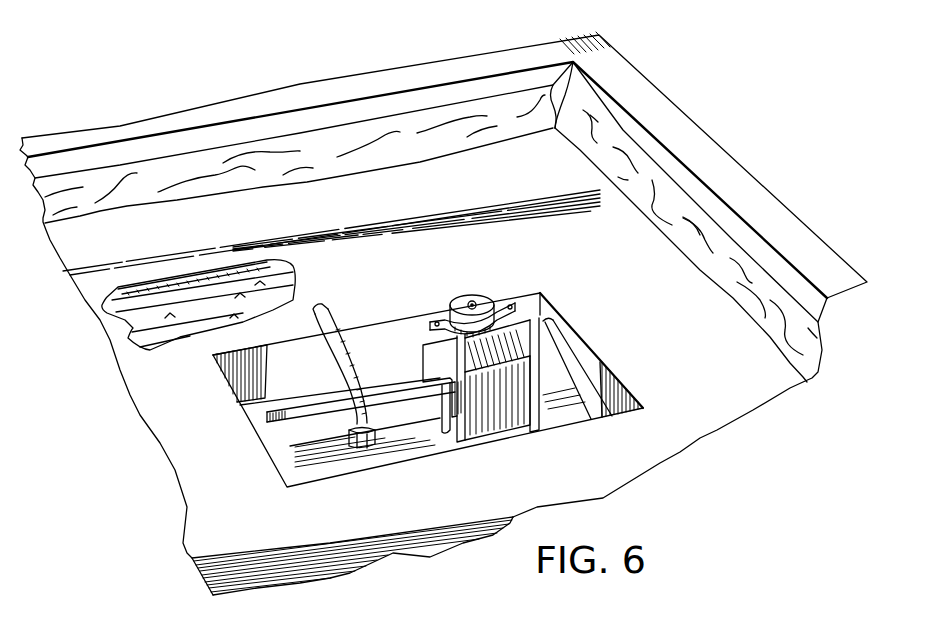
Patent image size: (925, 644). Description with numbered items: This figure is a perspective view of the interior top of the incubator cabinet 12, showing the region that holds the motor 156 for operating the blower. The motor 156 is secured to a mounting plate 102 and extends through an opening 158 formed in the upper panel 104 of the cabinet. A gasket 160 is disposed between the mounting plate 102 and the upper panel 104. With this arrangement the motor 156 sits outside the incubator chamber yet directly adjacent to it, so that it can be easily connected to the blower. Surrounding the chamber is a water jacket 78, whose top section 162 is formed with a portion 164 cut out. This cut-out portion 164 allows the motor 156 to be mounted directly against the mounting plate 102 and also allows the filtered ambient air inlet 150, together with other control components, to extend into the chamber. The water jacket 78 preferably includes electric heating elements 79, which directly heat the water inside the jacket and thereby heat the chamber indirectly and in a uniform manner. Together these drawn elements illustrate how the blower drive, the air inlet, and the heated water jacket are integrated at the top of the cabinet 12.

The insulated container body 12 is at (728, 146).
The water jacket 78 is at (296, 290).
The electric heating elements 79 is at (226, 318).
The mounting plate 102 is at (400, 446).
The upper panel 104 is at (258, 395).
The filtered ambient air inlet 150 is at (338, 320).
The motor 156 is at (490, 300).
The opening 158 is at (290, 450).
The gasket 160 is at (398, 372).
The top section 162 is at (614, 252).
The portion cut out 164 is at (572, 347).